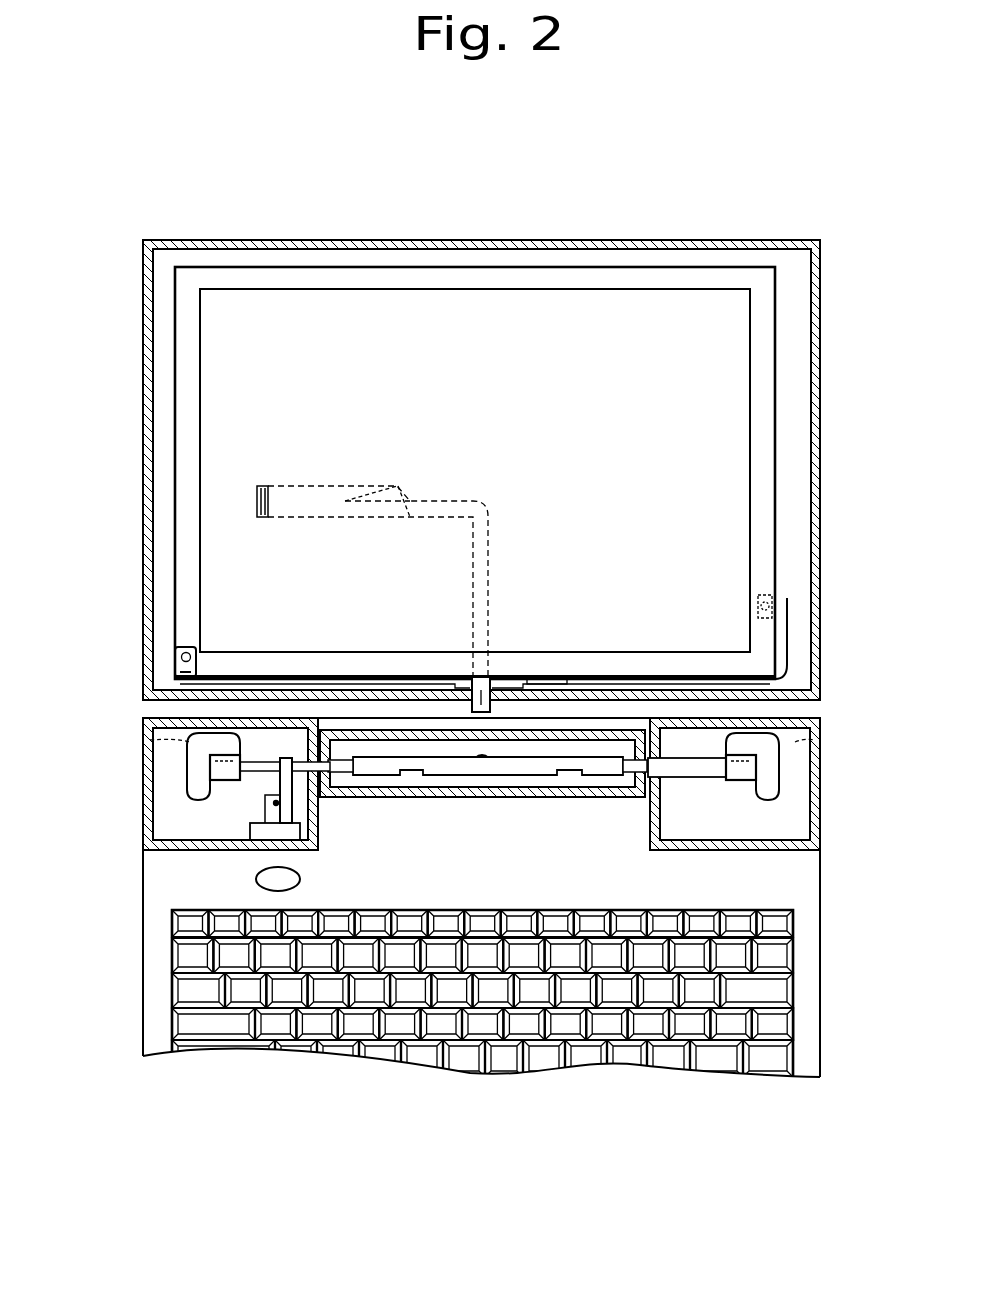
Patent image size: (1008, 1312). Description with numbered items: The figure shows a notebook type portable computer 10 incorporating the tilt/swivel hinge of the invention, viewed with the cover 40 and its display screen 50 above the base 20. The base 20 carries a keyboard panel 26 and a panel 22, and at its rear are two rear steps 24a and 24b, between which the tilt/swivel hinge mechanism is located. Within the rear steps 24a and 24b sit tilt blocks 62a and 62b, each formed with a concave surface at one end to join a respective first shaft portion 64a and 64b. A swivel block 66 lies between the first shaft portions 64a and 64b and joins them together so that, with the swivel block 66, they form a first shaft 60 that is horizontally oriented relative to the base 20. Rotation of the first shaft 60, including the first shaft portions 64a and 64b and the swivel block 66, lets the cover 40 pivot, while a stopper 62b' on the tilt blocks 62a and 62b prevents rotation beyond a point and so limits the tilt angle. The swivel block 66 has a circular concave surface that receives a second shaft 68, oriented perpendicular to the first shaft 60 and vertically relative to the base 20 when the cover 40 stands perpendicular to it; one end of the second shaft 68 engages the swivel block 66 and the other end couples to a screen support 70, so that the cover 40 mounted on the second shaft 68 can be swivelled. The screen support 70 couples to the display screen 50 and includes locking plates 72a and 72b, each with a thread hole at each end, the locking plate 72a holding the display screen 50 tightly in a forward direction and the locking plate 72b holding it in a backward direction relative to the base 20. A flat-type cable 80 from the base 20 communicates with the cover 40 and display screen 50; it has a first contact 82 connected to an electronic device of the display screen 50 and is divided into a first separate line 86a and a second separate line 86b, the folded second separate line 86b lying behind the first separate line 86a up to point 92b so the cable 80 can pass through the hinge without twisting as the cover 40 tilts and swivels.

The portable computer 10 is at (381, 145).
The base 20 is at (131, 989).
The panel 22 is at (526, 1023).
The rear step 24a is at (175, 817).
The rear step 24b is at (793, 817).
The keyboard panel 26 is at (458, 1072).
The cover 40 is at (772, 228).
The display screen 50 is at (541, 407).
The first shaft 60 is at (445, 780).
The tilt block 62a is at (200, 763).
The tilt block 62b is at (813, 766).
The stopper 62b' is at (489, 736).
The first shaft portion 64a is at (298, 771).
The first shaft portion 64b is at (678, 768).
The swivel block 66 is at (530, 771).
The second shaft 68 is at (486, 677).
The screen support 70 is at (555, 678).
The locking plate 72a is at (178, 657).
The locking plate 72b is at (778, 597).
The cable 80 is at (497, 552).
The first contact 82 is at (257, 500).
The first separate line 86a is at (379, 517).
The second separate line 86b is at (370, 486).
The point 92b is at (274, 800).